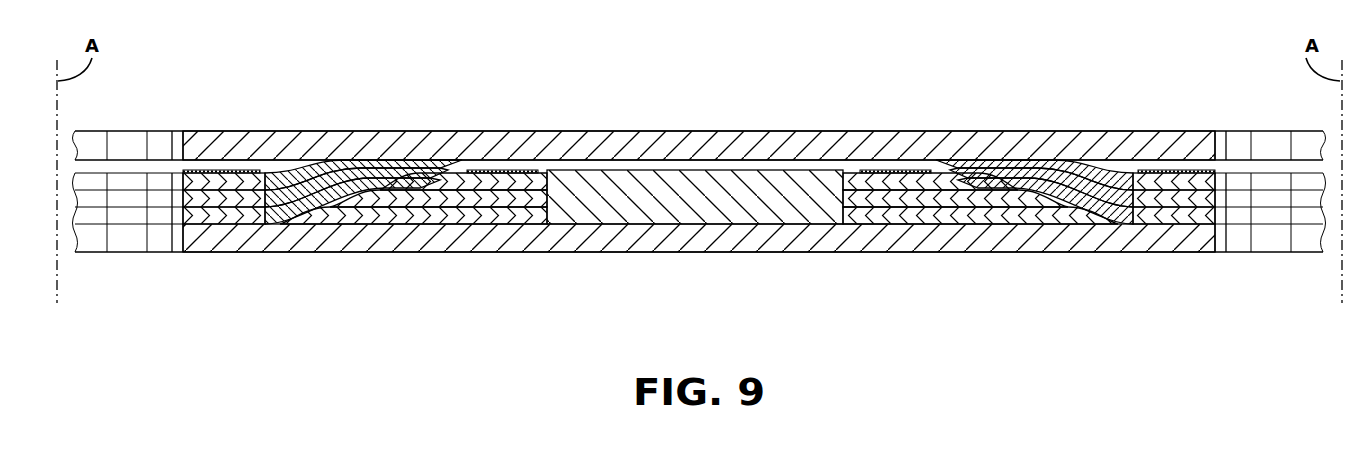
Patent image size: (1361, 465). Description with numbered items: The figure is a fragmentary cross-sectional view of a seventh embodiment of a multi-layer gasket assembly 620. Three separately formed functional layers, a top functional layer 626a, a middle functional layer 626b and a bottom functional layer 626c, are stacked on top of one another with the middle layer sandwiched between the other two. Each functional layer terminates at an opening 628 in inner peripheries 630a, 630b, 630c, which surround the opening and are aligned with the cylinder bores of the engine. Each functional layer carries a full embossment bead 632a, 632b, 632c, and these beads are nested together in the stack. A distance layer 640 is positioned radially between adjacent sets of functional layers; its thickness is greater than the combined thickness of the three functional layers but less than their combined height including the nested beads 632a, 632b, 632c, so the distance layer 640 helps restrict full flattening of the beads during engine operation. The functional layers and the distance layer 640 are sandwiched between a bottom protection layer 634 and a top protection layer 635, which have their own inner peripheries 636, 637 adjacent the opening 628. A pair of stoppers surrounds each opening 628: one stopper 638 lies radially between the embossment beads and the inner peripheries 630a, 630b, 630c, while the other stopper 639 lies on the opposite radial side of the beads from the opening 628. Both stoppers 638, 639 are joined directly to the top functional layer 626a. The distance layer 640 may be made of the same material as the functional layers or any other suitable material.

The multi-layer gasket assembly 620 is at (950, 88).
The top functional layer 626a is at (452, 190).
The middle functional layer 626b is at (483, 200).
The bottom functional layer 626c is at (514, 214).
The opening 628 is at (123, 213).
The inner periphery of top functional layer 630a is at (183, 185).
The inner periphery of middle functional layer 630b is at (183, 202).
The inner periphery of bottom functional layer 630c is at (183, 217).
The full embossment bead of top functional layer 632a is at (372, 168).
The full embossment bead of middle functional layer 632b is at (398, 178).
The full embossment bead of bottom functional layer 632c is at (407, 185).
The bottom protection layer 634 is at (653, 237).
The top protection layer 635 is at (698, 145).
The inner periphery of bottom protection layer 636 is at (177, 252).
The inner periphery of top protection layer 637 is at (183, 148).
The stopper 638 is at (203, 170).
The stopper 639 is at (498, 172).
The distance layer 640 is at (742, 213).